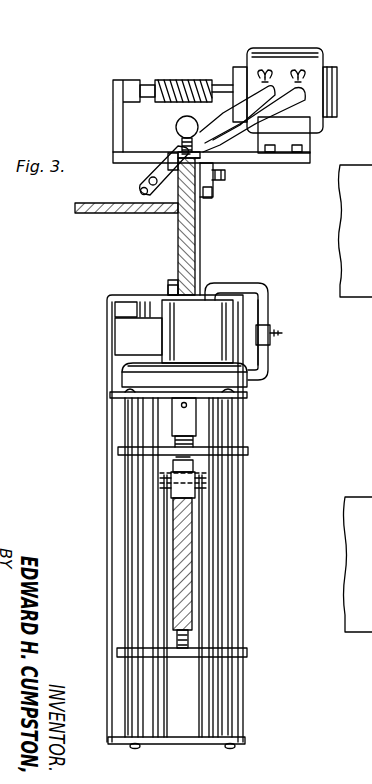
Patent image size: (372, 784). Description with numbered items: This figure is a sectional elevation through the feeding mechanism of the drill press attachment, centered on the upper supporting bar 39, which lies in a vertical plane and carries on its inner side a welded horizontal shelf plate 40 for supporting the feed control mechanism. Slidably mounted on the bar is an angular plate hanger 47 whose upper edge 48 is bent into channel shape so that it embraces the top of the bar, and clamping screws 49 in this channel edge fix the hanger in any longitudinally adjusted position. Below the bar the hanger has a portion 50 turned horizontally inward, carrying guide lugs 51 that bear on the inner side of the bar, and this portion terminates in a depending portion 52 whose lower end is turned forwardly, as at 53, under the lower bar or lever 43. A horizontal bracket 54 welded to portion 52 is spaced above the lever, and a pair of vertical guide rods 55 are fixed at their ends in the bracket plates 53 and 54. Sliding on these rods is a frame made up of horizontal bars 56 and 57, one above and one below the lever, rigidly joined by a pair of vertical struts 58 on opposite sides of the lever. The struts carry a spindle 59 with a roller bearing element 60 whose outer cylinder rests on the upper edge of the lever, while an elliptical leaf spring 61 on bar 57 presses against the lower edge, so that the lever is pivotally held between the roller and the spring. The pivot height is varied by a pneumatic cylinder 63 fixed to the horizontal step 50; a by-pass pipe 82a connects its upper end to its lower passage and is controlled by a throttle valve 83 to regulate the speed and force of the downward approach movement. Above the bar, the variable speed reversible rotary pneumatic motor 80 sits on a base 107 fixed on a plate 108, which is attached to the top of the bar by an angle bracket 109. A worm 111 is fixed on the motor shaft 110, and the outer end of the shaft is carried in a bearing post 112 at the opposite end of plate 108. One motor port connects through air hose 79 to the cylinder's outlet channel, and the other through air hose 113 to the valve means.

The upper supporting bar 39 is at (177, 245).
The horizontal shelf plate 40 is at (75, 209).
The lower bar or lever 43 is at (185, 553).
The angular plate hanger 47 is at (195, 240).
The upper edge 48 is at (177, 150).
The clamping screws 49 is at (176, 125).
The horizontal portion 50 is at (147, 296).
The guide lugs 51 is at (175, 288).
The depending portion 52 is at (126, 427).
The forwardly turned lower end 53 is at (168, 744).
The horizontal bracket 54 is at (247, 396).
The vertical guide rods 55 is at (243, 432).
The horizontal bar 56 is at (248, 452).
The horizontal bar 57 is at (247, 652).
The vertical struts 58 is at (208, 505).
The spindle 59 is at (190, 484).
The roller bearing element 60 is at (193, 466).
The elliptical leaf spring 61 is at (182, 640).
The cylinder 63 is at (207, 297).
The air hose 79 is at (295, 104).
The rotary pneumatic motor 80 is at (268, 52).
The by-pass pipe 82a is at (268, 312).
The throttle valve 83 is at (283, 335).
The base 107 is at (298, 138).
The plate 108 is at (288, 163).
The angle bracket 109 is at (230, 167).
The motor shaft 110 is at (233, 82).
The worm 111 is at (170, 79).
The post 112 is at (113, 120).
The air hose 113 is at (226, 85).